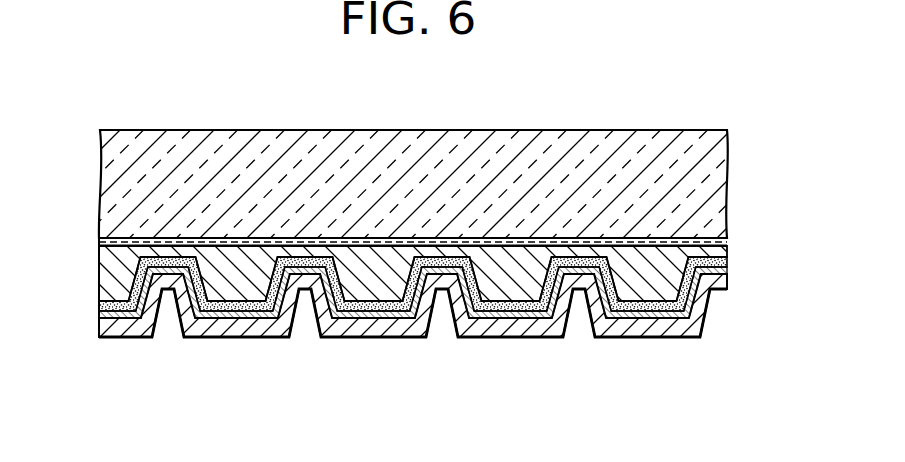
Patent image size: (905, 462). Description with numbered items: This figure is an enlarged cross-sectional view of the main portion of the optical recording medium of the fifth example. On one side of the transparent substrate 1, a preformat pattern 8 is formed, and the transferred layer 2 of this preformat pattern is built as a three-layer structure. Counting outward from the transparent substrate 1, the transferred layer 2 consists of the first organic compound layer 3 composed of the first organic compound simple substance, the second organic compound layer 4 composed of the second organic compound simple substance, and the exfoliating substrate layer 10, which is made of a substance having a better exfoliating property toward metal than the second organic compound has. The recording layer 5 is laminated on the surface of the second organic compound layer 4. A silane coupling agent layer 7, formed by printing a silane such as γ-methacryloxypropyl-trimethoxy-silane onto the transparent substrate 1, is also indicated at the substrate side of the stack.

The transparent substrate 1 is at (668, 148).
The transferred layer 2 is at (447, 192).
The first organic compound layer 3 is at (728, 251).
The second organic compound layer 4 is at (728, 262).
The recording layer 5 is at (530, 322).
The silane coupling agent layer 7 is at (132, 242).
The preformat pattern 8 is at (525, 240).
The exfoliating substrate layer 10 is at (450, 284).